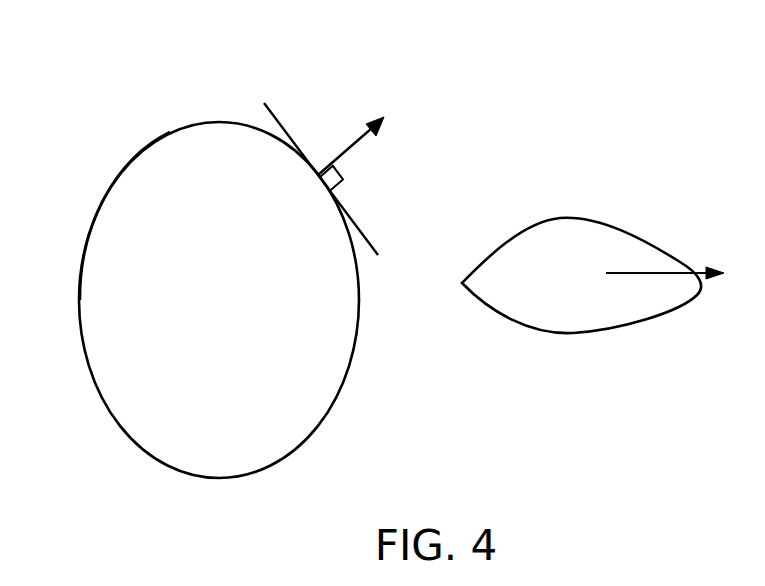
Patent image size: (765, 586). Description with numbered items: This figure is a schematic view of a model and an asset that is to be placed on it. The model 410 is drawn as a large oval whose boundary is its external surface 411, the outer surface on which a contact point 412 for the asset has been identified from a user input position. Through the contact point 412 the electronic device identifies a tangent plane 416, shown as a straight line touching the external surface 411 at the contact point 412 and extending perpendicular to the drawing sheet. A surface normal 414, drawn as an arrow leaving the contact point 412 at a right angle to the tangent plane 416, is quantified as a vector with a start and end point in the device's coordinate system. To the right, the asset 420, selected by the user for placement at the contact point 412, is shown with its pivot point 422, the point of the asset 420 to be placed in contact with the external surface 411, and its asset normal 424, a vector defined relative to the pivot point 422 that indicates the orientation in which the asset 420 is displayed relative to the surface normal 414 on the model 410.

The model 410 is at (162, 165).
The external surface 411 is at (88, 235).
The contact point 412 is at (318, 173).
The surface normal 414 is at (357, 135).
The tangent plane 416 is at (268, 107).
The asset 420 is at (567, 225).
The pivot point 422 is at (597, 298).
The asset normal 424 is at (675, 272).